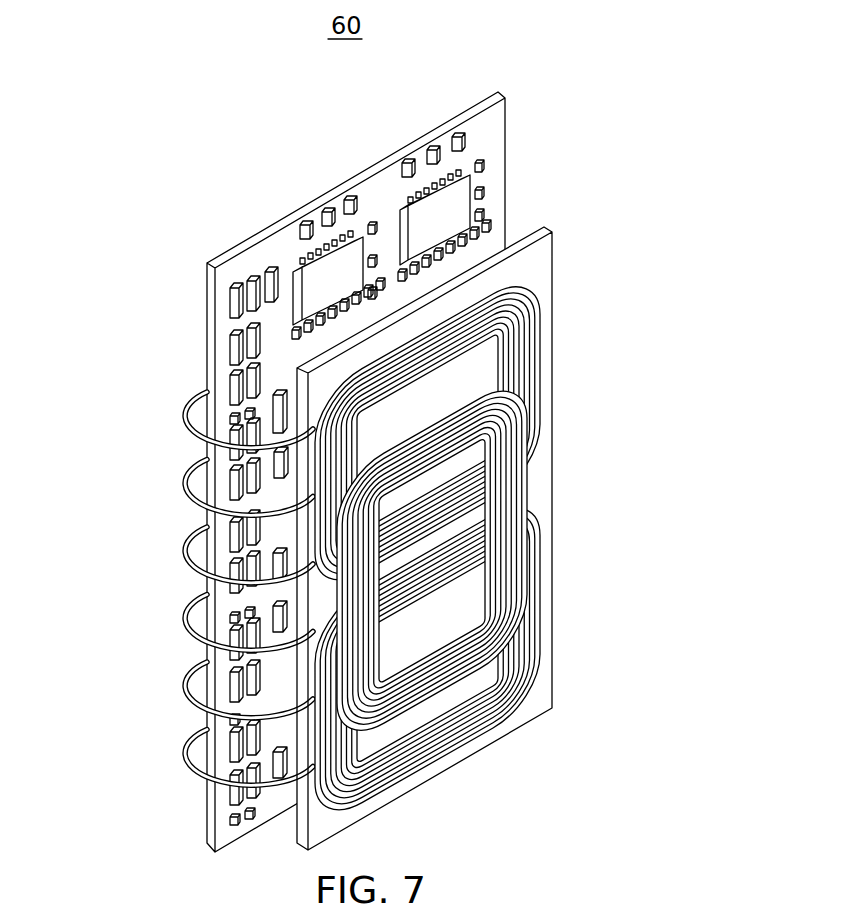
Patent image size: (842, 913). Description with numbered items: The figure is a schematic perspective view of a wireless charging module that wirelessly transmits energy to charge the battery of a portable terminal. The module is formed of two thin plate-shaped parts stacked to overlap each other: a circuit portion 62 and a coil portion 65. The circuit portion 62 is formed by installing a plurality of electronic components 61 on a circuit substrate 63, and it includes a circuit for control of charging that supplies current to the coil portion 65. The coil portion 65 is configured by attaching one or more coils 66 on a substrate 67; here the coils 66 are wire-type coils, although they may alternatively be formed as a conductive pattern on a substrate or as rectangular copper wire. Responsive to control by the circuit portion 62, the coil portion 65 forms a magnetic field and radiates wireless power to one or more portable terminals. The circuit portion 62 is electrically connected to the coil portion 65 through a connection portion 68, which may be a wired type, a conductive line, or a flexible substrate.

The electronic components 61 is at (310, 300).
The circuit portion 62 is at (100, 250).
The circuit substrate 63 is at (207, 347).
The coil portion 65 is at (678, 455).
The coil 66 is at (530, 600).
The substrate 67 is at (543, 470).
The connection portion 68 is at (197, 612).